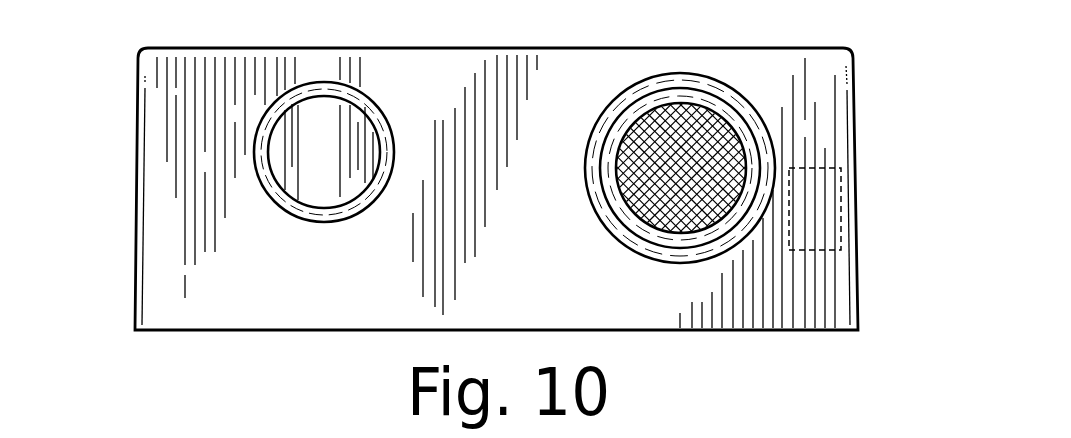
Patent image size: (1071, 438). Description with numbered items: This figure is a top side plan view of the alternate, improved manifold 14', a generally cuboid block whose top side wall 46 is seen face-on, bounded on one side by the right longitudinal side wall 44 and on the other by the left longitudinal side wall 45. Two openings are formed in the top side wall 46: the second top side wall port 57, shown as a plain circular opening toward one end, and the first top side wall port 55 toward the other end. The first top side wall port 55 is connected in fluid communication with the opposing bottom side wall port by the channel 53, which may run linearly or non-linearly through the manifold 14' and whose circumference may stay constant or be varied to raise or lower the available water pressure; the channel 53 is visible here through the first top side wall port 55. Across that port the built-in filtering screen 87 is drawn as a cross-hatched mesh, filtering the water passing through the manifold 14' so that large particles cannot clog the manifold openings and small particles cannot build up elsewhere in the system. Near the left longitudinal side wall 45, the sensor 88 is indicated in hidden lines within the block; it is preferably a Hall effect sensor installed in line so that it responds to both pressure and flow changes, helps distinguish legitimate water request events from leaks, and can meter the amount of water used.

The manifold 14' is at (450, 183).
The right longitudinal side wall 44 is at (137, 250).
The left longitudinal side wall 45 is at (858, 257).
The top side wall 46 is at (155, 203).
The second top side wall port 57 is at (315, 195).
The channel 53 is at (729, 130).
The first top side wall port 55 is at (648, 228).
The filtering screen 87 is at (640, 118).
The sensor 88 is at (818, 207).